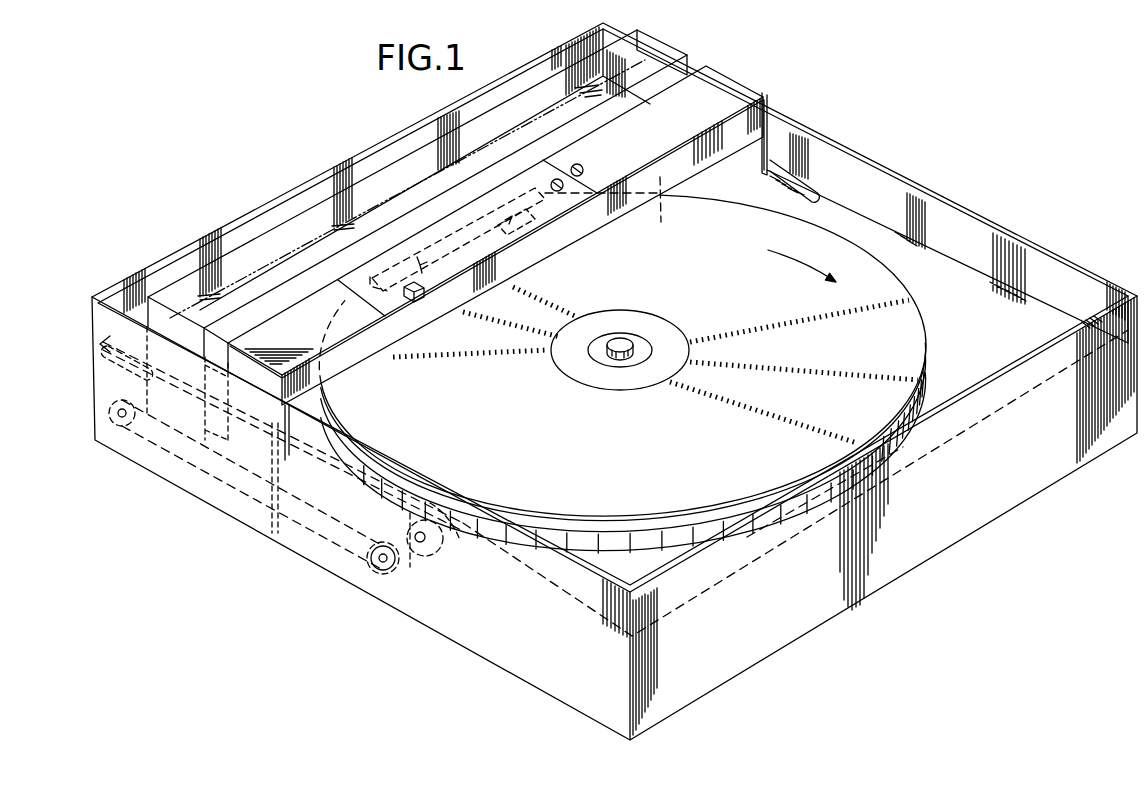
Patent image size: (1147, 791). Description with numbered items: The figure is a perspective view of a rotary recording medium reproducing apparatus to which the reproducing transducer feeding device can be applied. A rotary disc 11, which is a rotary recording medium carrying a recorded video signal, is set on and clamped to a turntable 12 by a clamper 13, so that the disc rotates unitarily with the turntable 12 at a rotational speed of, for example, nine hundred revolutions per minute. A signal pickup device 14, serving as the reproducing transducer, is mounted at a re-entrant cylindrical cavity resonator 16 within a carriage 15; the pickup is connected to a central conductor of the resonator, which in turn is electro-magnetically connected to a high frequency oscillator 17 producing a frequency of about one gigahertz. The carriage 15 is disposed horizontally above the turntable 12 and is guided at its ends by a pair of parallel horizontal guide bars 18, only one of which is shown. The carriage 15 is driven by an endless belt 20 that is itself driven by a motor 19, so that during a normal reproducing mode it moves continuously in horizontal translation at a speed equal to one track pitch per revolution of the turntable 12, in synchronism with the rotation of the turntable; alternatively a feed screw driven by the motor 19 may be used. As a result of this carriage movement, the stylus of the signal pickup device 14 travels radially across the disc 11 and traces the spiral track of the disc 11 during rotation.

The rotary disc 11 is at (915, 328).
The turntable 12 is at (605, 545).
The clamper 13 is at (615, 363).
The signal pickup device 14 is at (453, 264).
The carriage 15 is at (385, 172).
The re-entrant cylindrical cavity resonator 16 is at (550, 248).
The high frequency oscillator 17 is at (617, 213).
The guide bars 18 is at (312, 483).
The motor 19 is at (460, 543).
The endless belt 20 is at (352, 523).